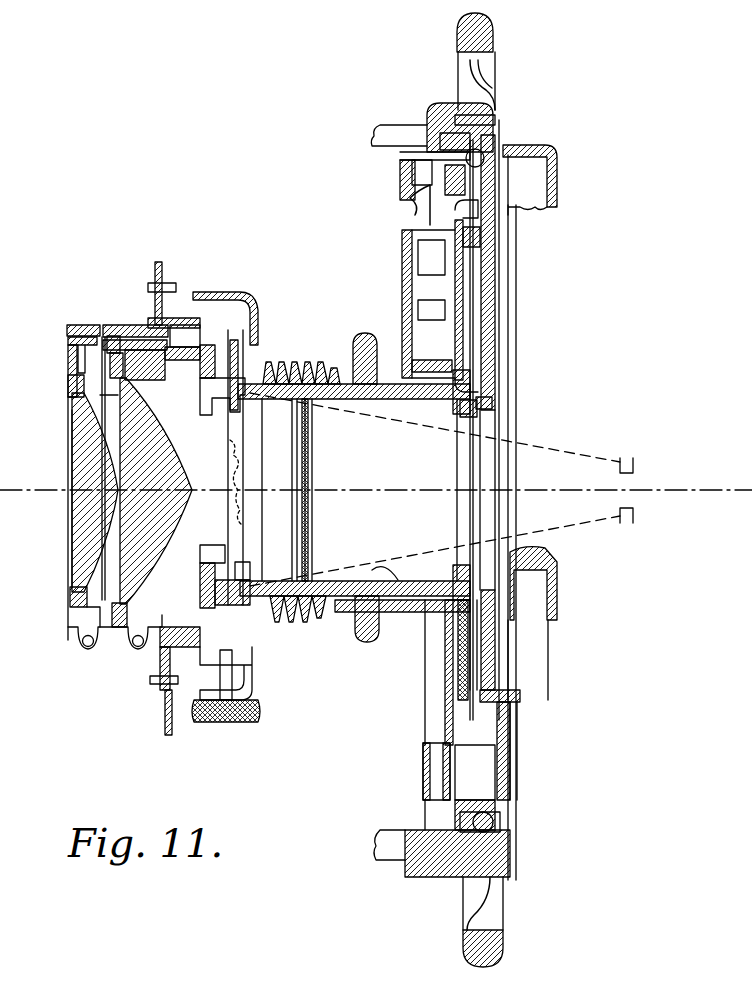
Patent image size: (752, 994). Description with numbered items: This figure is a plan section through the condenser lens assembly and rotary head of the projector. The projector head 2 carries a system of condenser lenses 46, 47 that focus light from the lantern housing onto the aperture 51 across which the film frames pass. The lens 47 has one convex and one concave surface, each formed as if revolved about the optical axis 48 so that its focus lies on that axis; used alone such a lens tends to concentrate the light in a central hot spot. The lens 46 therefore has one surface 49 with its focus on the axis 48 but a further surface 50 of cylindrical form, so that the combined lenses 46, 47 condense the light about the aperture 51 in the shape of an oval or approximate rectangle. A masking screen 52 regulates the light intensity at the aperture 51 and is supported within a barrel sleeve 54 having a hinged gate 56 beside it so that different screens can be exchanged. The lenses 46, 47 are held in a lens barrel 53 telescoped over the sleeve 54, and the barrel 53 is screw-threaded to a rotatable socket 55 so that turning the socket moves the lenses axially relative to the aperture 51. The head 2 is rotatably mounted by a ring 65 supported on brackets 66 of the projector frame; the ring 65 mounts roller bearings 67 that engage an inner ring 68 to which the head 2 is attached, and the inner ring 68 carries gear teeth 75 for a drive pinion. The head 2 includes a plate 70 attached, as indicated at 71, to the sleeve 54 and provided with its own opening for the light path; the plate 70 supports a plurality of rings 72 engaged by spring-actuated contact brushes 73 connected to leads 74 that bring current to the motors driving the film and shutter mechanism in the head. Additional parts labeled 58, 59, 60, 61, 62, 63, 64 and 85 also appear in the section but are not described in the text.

The projector head 2 is at (560, 167).
The condenser lens 46 is at (88, 540).
The condenser lens 47 is at (186, 476).
The optical axis 48 is at (30, 490).
The surface 49 is at (118, 458).
The cylindrical surface 50 is at (72, 505).
The aperture 51 is at (630, 487).
The masking screen 52 is at (308, 522).
The lens barrel 53 is at (340, 372).
The barrel sleeve 54 is at (383, 399).
The socket 55 is at (404, 612).
The hinged gate 56 is at (296, 622).
The guide bracket 58 is at (250, 562).
The adjusting slide 59 is at (232, 412).
The adjusting post 60 is at (232, 520).
The lower bracket 61 is at (218, 555).
The lens mount ring 62 is at (171, 347).
The focusing knob 63 is at (210, 722).
The arched bracket 64 is at (253, 300).
The ring 65 is at (436, 106).
The brackets 66 is at (382, 856).
The roller bearings 67 is at (492, 822).
The inner ring 68 is at (422, 212).
The plate 70 is at (497, 352).
The attachment 71 is at (492, 402).
The rings 72 is at (463, 370).
The spring-actuated electrical contact brushes 73 is at (432, 324).
The leads 74 is at (402, 186).
The gear teeth 75 is at (400, 156).
The guide rail 85 is at (558, 198).